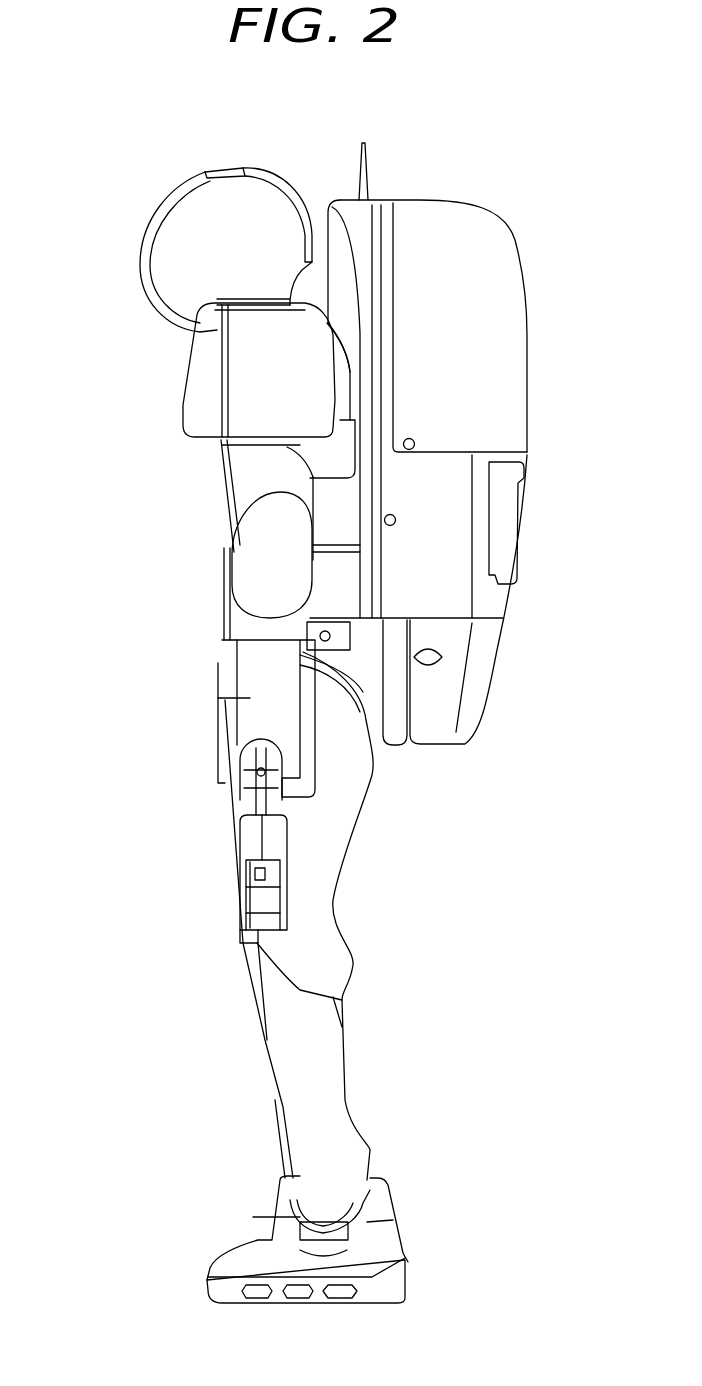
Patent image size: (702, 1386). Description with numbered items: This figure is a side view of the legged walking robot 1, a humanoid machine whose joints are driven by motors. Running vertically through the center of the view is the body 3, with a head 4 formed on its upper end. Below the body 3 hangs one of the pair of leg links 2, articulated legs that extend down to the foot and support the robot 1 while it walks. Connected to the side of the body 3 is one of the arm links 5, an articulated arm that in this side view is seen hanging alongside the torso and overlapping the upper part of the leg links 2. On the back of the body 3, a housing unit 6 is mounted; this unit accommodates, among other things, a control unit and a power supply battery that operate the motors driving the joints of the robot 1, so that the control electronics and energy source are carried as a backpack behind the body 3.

The robot 1 is at (434, 187).
The leg links 2 is at (265, 1040).
The body 3 is at (173, 398).
The head 4 is at (240, 198).
The arm links 5 is at (247, 698).
The housing unit 6 is at (500, 323).